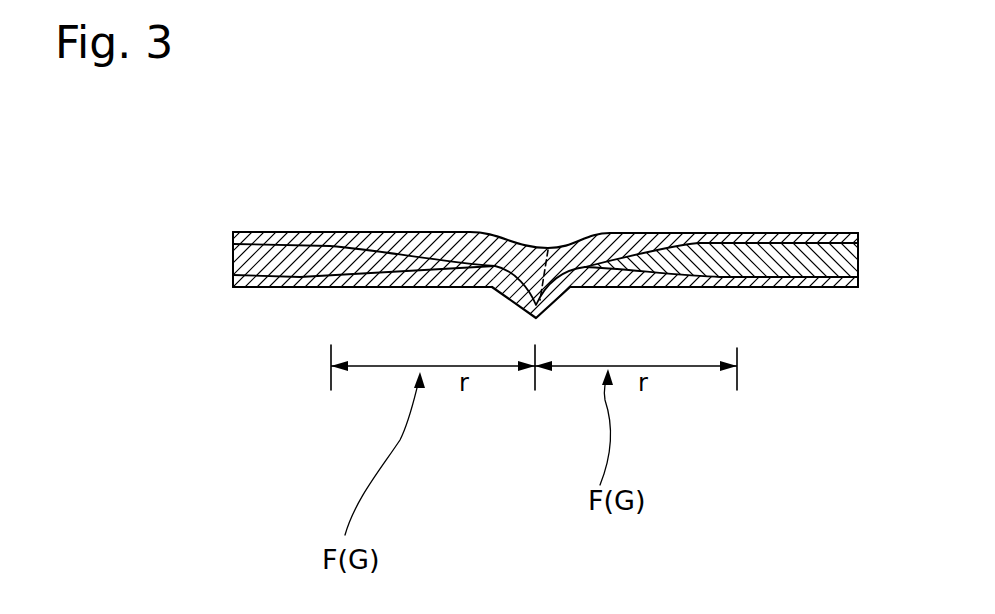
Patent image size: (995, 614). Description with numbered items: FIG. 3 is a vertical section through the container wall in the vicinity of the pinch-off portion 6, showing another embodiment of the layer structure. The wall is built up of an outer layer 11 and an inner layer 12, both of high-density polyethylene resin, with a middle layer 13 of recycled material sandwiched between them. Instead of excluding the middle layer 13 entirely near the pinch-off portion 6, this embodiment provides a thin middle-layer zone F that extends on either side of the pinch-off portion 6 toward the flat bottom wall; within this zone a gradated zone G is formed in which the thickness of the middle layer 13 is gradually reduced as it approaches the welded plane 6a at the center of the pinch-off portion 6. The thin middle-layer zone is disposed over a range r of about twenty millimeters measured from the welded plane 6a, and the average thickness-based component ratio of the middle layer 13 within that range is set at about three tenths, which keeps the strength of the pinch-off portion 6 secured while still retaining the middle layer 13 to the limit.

The pinch-off portion 6 is at (524, 322).
The welded plane 6a is at (548, 247).
The outer layer 11 is at (266, 280).
The inner layer 12 is at (272, 233).
The middle layer 13 is at (292, 258).